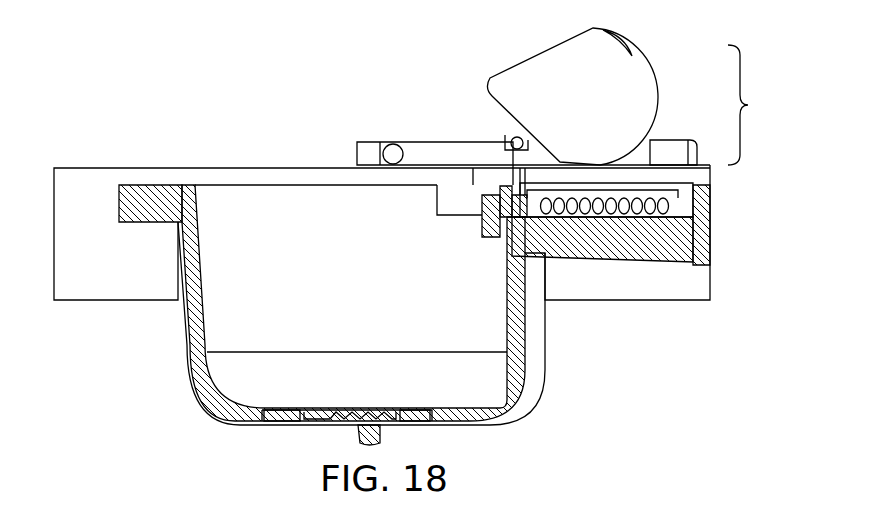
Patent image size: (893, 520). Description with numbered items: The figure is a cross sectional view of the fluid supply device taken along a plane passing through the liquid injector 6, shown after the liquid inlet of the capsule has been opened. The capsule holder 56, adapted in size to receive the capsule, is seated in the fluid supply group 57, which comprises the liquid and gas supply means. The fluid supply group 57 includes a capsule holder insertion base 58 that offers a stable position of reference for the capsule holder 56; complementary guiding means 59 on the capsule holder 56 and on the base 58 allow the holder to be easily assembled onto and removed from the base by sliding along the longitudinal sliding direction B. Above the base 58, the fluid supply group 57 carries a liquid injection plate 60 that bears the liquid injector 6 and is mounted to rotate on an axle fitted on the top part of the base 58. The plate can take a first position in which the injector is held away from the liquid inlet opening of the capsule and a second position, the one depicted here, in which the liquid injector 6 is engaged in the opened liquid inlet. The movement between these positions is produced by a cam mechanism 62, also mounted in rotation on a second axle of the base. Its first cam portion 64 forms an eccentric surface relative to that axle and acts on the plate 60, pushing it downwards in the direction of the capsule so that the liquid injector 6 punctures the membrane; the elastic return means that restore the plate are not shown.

The liquid injector 6 is at (509, 178).
The capsule holder 56 is at (189, 380).
The fluid supply group 57 is at (752, 105).
The capsule holder insertion base 58 is at (97, 181).
The complementary guiding means 59 is at (146, 230).
The liquid injection plate 60 is at (431, 141).
The cam mechanism 62 is at (662, 128).
The first cam portion 64 is at (630, 68).
The longitudinal sliding direction B is at (718, 203).